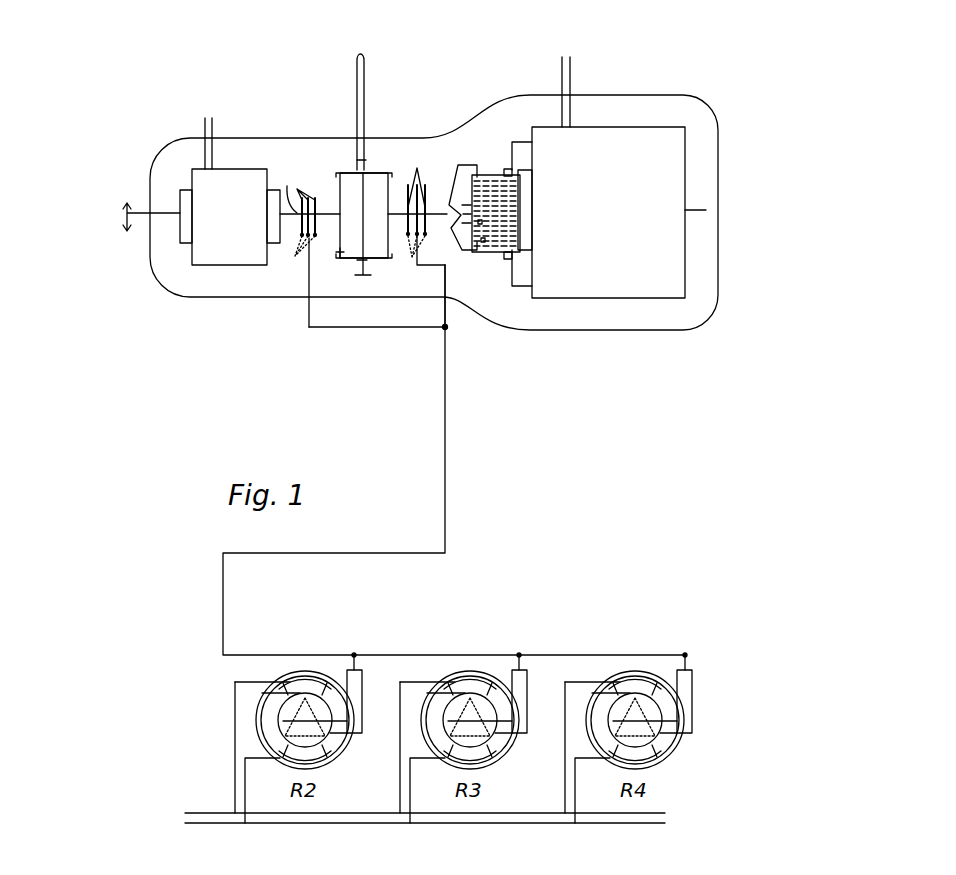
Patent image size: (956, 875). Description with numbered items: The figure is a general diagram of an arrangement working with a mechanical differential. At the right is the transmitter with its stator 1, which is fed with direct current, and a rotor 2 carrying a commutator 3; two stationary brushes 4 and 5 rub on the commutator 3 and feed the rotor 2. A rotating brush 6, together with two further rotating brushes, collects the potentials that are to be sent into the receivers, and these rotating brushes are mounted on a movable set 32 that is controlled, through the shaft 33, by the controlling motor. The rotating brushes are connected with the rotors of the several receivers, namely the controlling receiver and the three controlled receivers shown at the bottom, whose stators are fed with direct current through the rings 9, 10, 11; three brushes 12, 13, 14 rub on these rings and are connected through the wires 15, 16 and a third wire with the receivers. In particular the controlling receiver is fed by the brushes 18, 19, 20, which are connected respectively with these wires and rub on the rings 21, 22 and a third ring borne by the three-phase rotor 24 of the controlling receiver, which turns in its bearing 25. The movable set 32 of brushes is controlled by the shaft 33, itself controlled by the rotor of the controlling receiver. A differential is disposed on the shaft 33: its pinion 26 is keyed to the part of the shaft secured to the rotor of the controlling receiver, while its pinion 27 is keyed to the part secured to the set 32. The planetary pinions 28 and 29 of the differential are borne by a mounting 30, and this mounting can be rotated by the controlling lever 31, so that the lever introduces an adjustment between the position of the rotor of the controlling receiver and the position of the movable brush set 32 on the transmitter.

The transmitter motor T1 1 is at (598, 148).
The rotor 2 is at (529, 252).
The commutator 3 is at (490, 193).
The stationary brush 4 is at (509, 172).
The stationary brush 5 is at (510, 257).
The rotating brush 6 is at (447, 190).
The ring 9 is at (404, 196).
The ring 10 is at (408, 210).
The ring 11 is at (425, 210).
The brush 12 is at (410, 238).
The brush 13 is at (416, 246).
The brush 14 is at (431, 250).
The wire 15 is at (417, 262).
The wire 16 is at (445, 327).
The brush 18 is at (292, 232).
The brush 19 is at (308, 217).
The brush 20 is at (315, 217).
The ring 21 is at (297, 188).
The ring 22 is at (305, 246).
The three-phase rotor 24 is at (215, 183).
The bearing 25 is at (277, 197).
The pinion 26 is at (308, 237).
The pinion 27 is at (386, 190).
The planetary pinion 28 is at (350, 173).
The planetary pinion 29 is at (339, 252).
The mounting 30 is at (364, 205).
The controlling lever 31 is at (357, 103).
The movable set 32 is at (453, 178).
The shaft 33 is at (293, 215).